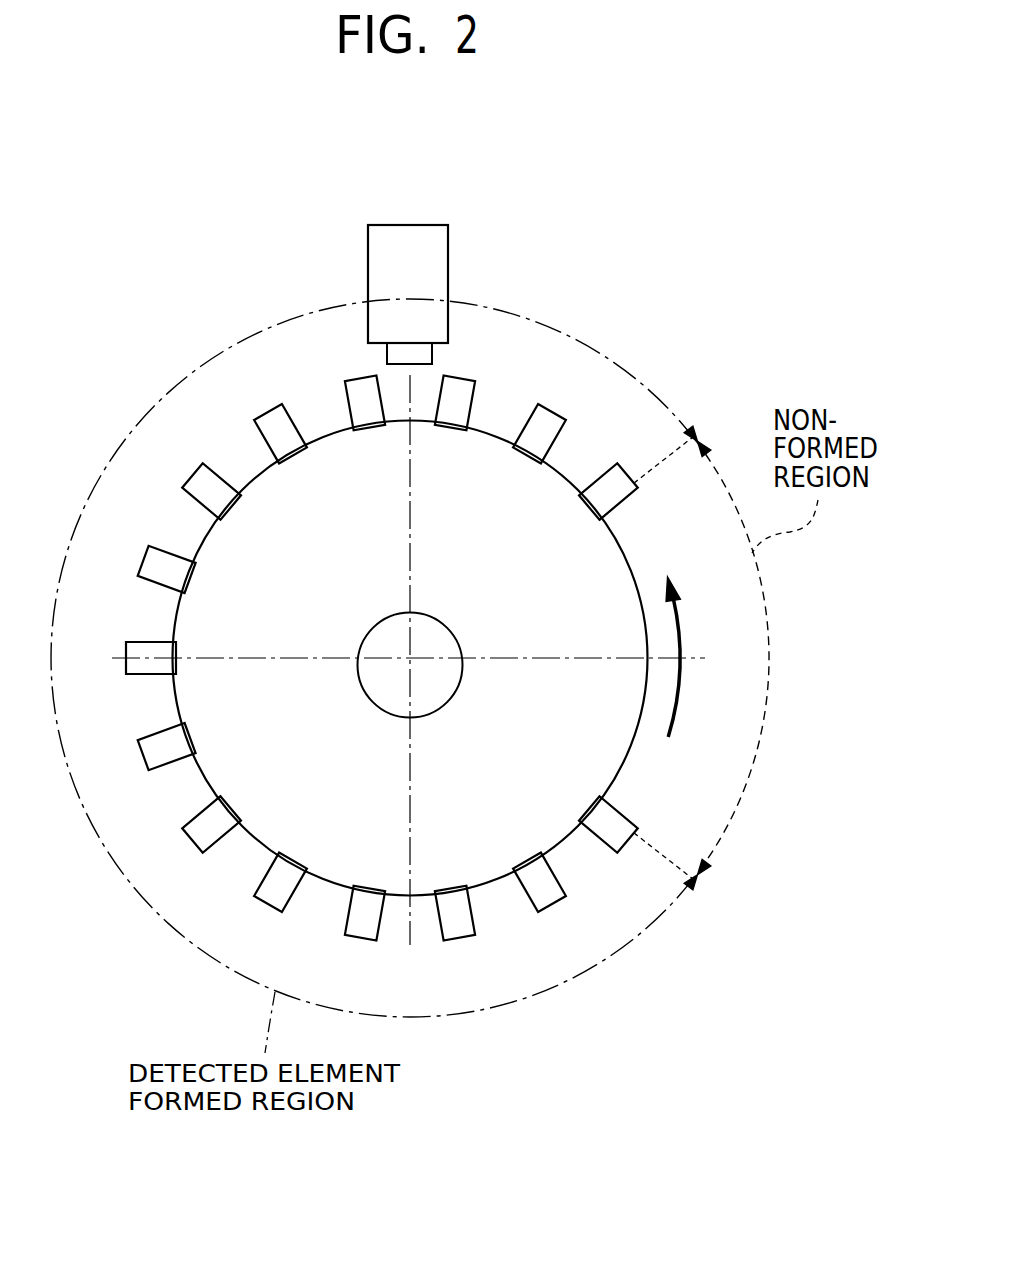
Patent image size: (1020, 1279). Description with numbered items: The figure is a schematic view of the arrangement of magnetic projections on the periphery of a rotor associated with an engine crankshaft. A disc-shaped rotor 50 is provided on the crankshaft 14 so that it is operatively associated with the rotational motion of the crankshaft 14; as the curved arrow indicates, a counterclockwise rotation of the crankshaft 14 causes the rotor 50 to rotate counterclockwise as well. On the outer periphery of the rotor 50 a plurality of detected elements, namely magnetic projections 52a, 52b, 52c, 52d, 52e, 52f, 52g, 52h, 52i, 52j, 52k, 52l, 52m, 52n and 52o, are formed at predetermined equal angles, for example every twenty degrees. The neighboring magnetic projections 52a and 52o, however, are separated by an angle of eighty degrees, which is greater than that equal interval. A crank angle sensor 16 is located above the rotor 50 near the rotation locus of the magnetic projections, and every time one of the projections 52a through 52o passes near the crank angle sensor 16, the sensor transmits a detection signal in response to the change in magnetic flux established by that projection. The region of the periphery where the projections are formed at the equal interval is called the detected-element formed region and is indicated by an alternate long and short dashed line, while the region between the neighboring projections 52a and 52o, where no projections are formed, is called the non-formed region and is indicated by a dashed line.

The crankshaft 14 is at (438, 685).
The crank angle sensor 16 is at (410, 225).
The rotor 50 is at (593, 587).
The magnetic projection 52a is at (611, 833).
The magnetic projection 52b is at (545, 887).
The magnetic projection 52c is at (455, 918).
The magnetic projection 52d is at (365, 918).
The magnetic projection 52e is at (279, 888).
The magnetic projection 52f is at (205, 833).
The magnetic projection 52g is at (160, 752).
The magnetic projection 52h is at (142, 667).
The magnetic projection 52i is at (153, 568).
The magnetic projection 52j is at (198, 483).
The magnetic projection 52k is at (272, 420).
The magnetic projection 52l is at (358, 387).
The magnetic projection 52m is at (455, 386).
The magnetic projection 52n is at (550, 425).
The magnetic projection 52o is at (617, 476).